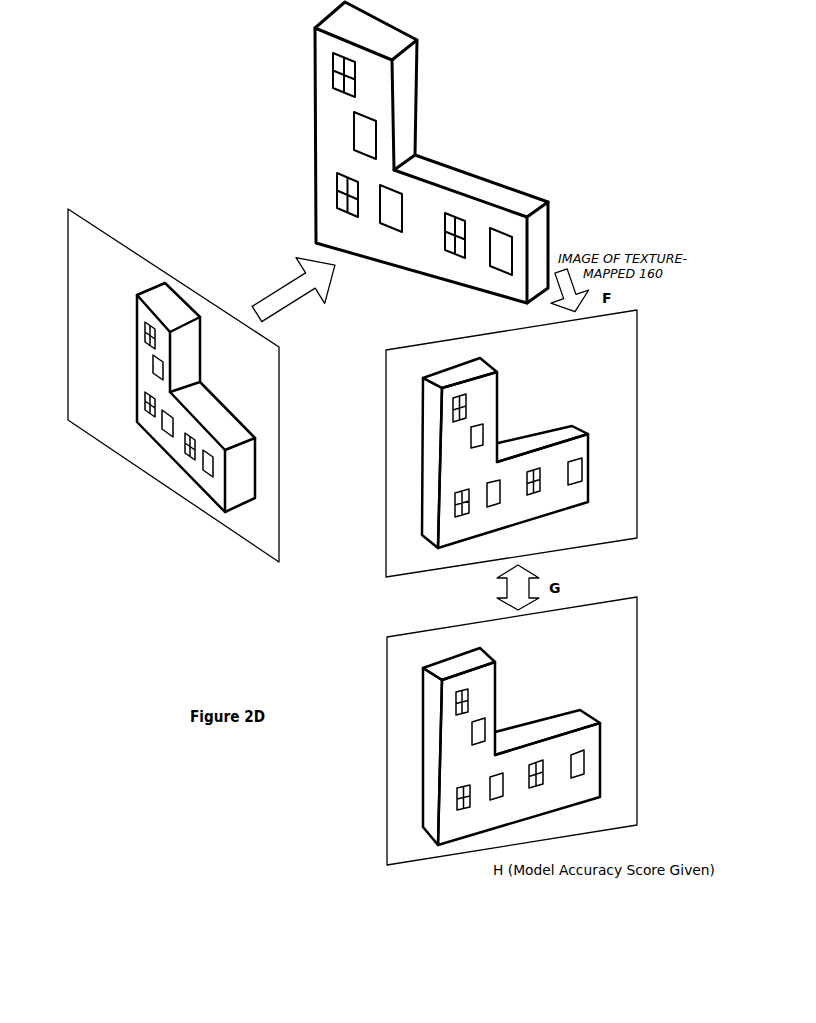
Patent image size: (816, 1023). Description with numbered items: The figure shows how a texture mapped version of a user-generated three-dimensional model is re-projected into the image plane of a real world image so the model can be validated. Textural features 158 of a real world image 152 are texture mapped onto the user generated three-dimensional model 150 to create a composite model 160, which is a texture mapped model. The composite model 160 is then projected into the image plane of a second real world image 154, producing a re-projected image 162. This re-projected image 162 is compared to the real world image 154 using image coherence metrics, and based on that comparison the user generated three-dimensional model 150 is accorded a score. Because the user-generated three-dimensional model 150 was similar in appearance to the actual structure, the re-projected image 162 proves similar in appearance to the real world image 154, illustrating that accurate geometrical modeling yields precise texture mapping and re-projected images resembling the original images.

The user-generated 3-D model 150 is at (255, 289).
The real world image 152 is at (140, 290).
The real world image 154 is at (423, 772).
The textural features 158 is at (405, 195).
The composite model 160 is at (315, 108).
The re-projected image 162 is at (463, 328).